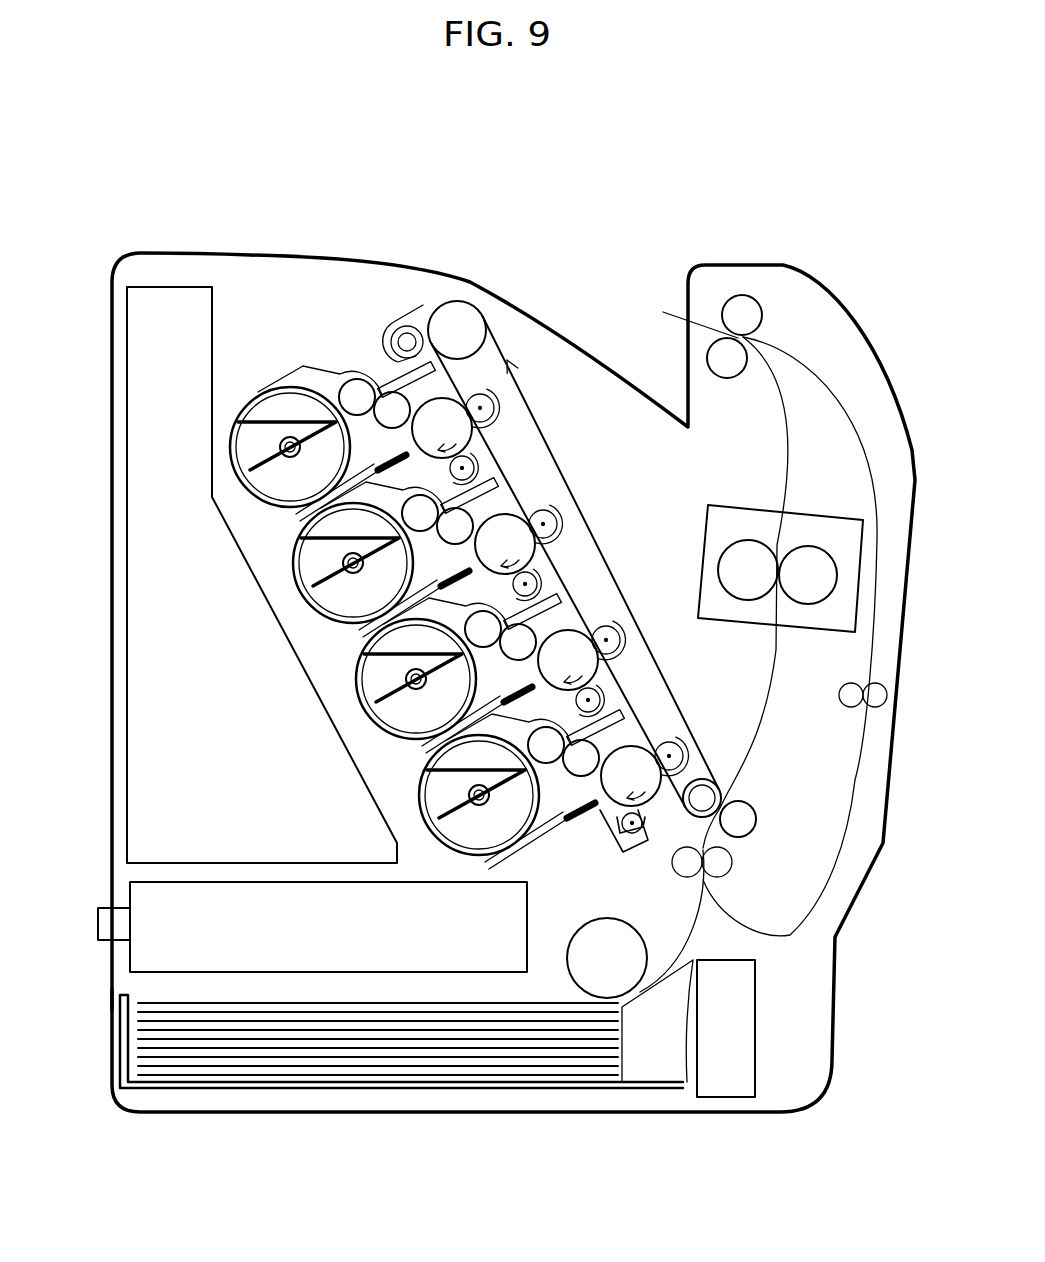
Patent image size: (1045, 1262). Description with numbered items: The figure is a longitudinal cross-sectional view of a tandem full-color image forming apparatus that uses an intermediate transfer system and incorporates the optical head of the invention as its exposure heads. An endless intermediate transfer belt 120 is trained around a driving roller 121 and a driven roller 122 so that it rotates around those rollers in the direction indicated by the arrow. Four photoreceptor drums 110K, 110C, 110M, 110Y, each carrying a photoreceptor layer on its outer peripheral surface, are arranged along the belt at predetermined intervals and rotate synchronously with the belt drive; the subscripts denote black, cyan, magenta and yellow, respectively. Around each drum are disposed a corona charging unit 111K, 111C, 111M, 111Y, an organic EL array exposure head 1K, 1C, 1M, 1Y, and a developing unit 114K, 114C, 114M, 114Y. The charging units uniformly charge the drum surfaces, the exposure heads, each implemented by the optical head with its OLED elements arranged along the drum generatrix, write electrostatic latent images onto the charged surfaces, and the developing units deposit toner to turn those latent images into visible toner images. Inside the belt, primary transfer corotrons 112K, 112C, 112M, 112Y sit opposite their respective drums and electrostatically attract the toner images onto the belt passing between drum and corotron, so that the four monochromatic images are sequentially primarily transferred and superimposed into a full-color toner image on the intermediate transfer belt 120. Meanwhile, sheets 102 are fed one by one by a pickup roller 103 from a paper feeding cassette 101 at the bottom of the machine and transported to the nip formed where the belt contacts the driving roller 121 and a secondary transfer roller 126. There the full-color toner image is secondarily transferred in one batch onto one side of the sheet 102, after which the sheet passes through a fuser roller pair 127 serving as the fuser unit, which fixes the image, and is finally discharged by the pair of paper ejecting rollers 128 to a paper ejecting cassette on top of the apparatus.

The organic EL array exposure head 1Y is at (322, 515).
The organic EL array exposure head 1M is at (372, 640).
The organic EL array exposure head 1C is at (438, 750).
The organic EL array exposure head 1K is at (600, 812).
The photoreceptor drum 110Y is at (462, 430).
The photoreceptor drum 110M is at (478, 548).
The photoreceptor drum 110C is at (540, 664).
The photoreceptor drum 110K is at (655, 748).
The corona charging unit 111Y is at (473, 460).
The corona charging unit 111M is at (537, 578).
The corona charging unit 111C is at (598, 700).
The corona charging unit 111K is at (648, 820).
The primary transfer corotron 112Y is at (475, 392).
The primary transfer corotron 112M is at (550, 520).
The primary transfer corotron 112C is at (608, 637).
The primary transfer corotron 112K is at (665, 755).
The developing unit 114Y is at (383, 398).
The developing unit 114M is at (455, 520).
The developing unit 114C is at (520, 630).
The developing unit 114K is at (568, 780).
The intermediate transfer belt 120 is at (567, 483).
The driving roller 121 is at (713, 780).
The driven roller 122 is at (463, 322).
The secondary transfer roller 126 is at (748, 812).
The fuser roller pair 127 is at (818, 512).
The paper ejecting rollers 128 is at (742, 365).
The paper feeding cassette 101 is at (112, 1000).
The sheet 102 is at (345, 1082).
The pickup roller 103 is at (625, 931).